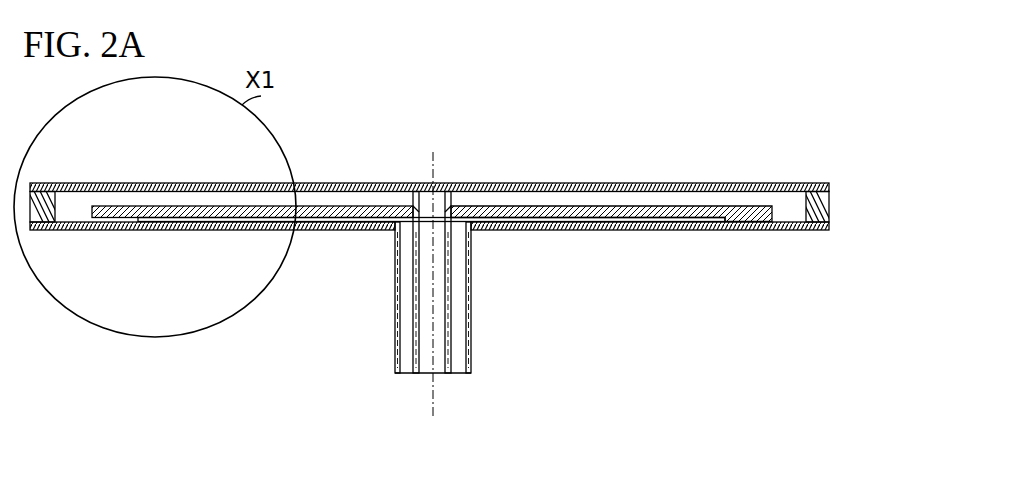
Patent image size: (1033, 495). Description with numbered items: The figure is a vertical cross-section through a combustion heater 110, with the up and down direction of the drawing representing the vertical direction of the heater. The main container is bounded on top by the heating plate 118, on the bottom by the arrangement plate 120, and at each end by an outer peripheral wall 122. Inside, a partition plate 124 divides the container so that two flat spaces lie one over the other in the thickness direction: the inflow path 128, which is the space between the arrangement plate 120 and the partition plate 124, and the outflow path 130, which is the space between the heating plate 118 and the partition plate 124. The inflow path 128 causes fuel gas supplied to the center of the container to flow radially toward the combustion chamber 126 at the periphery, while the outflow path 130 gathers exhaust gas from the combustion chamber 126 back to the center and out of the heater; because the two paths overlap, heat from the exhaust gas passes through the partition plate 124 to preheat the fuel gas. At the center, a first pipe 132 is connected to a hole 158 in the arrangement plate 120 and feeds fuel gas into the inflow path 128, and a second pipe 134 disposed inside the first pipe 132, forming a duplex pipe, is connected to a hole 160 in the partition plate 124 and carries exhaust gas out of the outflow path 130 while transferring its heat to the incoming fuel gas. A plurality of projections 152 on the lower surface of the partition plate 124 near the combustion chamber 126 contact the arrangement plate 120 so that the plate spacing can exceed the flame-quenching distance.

The combustion heater 110 is at (748, 117).
The heating plate 118 is at (640, 183).
The arrangement plate 120 is at (639, 224).
The outer peripheral wall 122 is at (32, 217).
The partition plate 124 is at (555, 203).
The combustion chamber 126 is at (74, 212).
The inflow path 128 is at (212, 218).
The outflow path 130 is at (213, 202).
The first pipe 132 is at (470, 337).
The second pipe 134 is at (450, 365).
The projections 152 is at (717, 221).
The hole 158 is at (457, 226).
The hole 160 is at (427, 203).